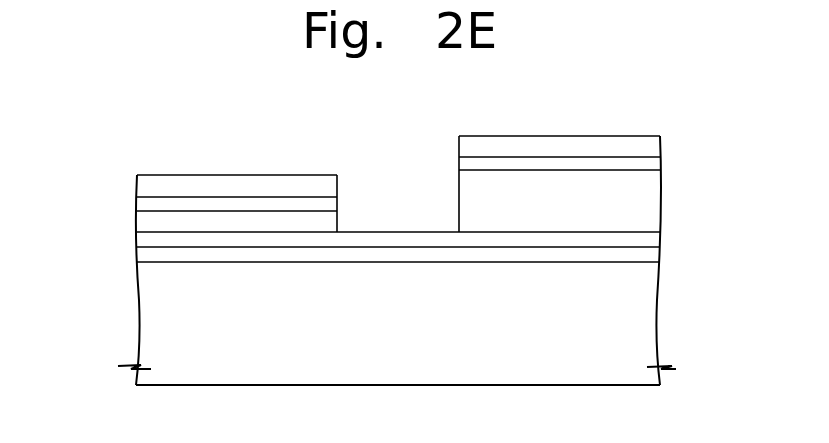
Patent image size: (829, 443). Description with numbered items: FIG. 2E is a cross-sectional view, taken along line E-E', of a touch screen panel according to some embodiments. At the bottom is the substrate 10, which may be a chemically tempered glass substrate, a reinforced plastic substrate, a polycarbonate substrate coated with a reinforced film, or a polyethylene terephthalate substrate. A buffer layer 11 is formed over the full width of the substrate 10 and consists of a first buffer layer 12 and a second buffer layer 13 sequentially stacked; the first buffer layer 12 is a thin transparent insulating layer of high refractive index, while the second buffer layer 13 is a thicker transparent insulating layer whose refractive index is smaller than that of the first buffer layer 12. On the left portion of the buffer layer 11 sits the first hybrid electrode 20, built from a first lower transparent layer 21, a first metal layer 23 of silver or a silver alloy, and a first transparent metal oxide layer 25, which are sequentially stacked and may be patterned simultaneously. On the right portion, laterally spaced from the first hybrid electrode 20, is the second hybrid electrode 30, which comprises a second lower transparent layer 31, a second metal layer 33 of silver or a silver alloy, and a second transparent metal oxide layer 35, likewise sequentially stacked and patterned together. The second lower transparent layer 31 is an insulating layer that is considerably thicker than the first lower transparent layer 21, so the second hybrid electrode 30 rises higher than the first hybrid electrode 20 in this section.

The substrate 10 is at (648, 311).
The buffer layer 11 is at (454, 257).
The first buffer layer 12 is at (727, 228).
The second buffer layer 13 is at (648, 237).
The first hybrid electrode 20 is at (182, 215).
The first lower transparent layer 21 is at (148, 223).
The first metal layer 23 is at (148, 205).
The first transparent metal oxide layer 25 is at (148, 184).
The second hybrid electrode 30 is at (615, 181).
The second lower transparent layer 31 is at (684, 203).
The second metal layer 33 is at (648, 164).
The second transparent metal oxide layer 35 is at (648, 142).